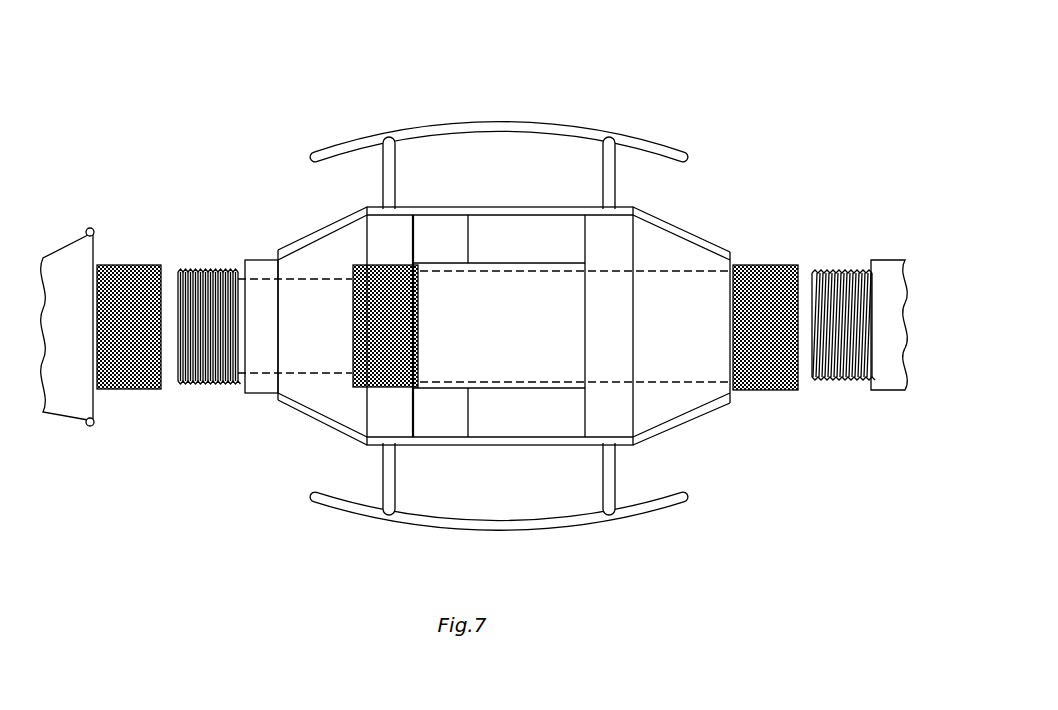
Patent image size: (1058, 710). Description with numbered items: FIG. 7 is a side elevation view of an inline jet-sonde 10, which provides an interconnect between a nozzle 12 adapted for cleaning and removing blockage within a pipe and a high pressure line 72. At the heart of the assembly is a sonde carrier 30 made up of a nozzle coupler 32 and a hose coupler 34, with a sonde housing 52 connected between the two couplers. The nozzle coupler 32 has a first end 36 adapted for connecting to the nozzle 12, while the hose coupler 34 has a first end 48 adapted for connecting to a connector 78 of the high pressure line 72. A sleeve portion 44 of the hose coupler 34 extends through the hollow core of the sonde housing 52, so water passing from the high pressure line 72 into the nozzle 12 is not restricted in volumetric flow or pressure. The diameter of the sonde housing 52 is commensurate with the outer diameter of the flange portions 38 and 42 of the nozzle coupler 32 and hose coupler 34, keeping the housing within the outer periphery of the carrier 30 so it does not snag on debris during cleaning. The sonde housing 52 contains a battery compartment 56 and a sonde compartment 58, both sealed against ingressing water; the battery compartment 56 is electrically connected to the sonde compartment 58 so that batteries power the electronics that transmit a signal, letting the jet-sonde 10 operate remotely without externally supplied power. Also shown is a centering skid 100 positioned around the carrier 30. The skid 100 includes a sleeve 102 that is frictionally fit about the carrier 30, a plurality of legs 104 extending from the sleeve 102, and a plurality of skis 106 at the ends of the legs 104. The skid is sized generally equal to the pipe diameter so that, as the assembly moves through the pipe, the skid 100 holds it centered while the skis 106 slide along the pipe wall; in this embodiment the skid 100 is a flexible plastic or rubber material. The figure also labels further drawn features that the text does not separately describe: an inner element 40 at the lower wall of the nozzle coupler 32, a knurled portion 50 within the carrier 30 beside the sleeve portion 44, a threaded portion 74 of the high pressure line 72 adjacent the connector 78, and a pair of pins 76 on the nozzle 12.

The inline jet-sonde 10 is at (673, 90).
The nozzle 12 is at (92, 218).
The sonde carrier 30 is at (653, 217).
The nozzle coupler 32 is at (295, 413).
The hose coupler 34 is at (685, 230).
The first end 36 is at (218, 270).
The flange portion 38 is at (368, 213).
The inner sleeve 40 is at (386, 388).
The flange portion 42 is at (627, 440).
The sleeve portion 44 is at (502, 385).
The first end 48 is at (773, 267).
The knurled insert 50 is at (350, 280).
The sonde housing 52 is at (538, 213).
The battery compartment 56 is at (433, 223).
The sonde compartment 58 is at (493, 223).
The high pressure line 72 is at (880, 383).
The threaded stem 74 is at (840, 275).
The pin 76 is at (94, 230).
The connector 78 is at (122, 390).
The centering skid 100 is at (442, 122).
The sleeve 102 is at (323, 230).
The legs 104 is at (605, 475).
The skis 106 is at (570, 525).